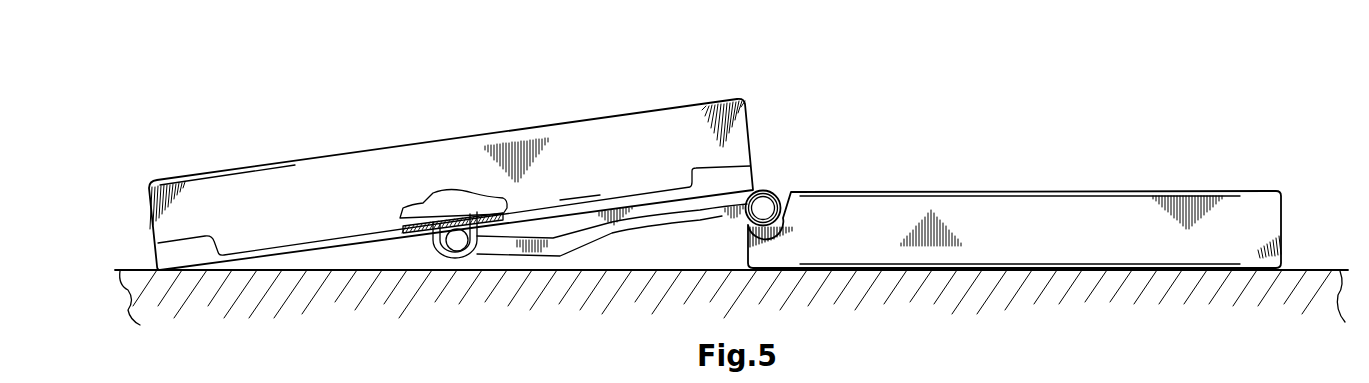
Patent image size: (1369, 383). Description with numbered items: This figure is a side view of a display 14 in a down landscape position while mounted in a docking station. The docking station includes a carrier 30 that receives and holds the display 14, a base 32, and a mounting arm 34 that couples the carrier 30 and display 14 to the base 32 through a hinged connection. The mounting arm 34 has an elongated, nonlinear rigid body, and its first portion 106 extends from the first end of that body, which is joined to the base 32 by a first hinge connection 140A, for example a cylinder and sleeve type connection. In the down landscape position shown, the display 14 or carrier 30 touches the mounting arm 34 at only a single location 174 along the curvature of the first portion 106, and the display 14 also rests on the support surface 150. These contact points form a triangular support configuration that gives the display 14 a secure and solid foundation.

The display 14 is at (442, 153).
The carrier 30 is at (737, 175).
The base 32 is at (1020, 220).
The mounting arm 34 is at (595, 225).
The first portion 106 is at (643, 215).
The support surface 150 is at (145, 270).
The single location 174 is at (659, 199).
The first hinge connection 140A is at (787, 216).